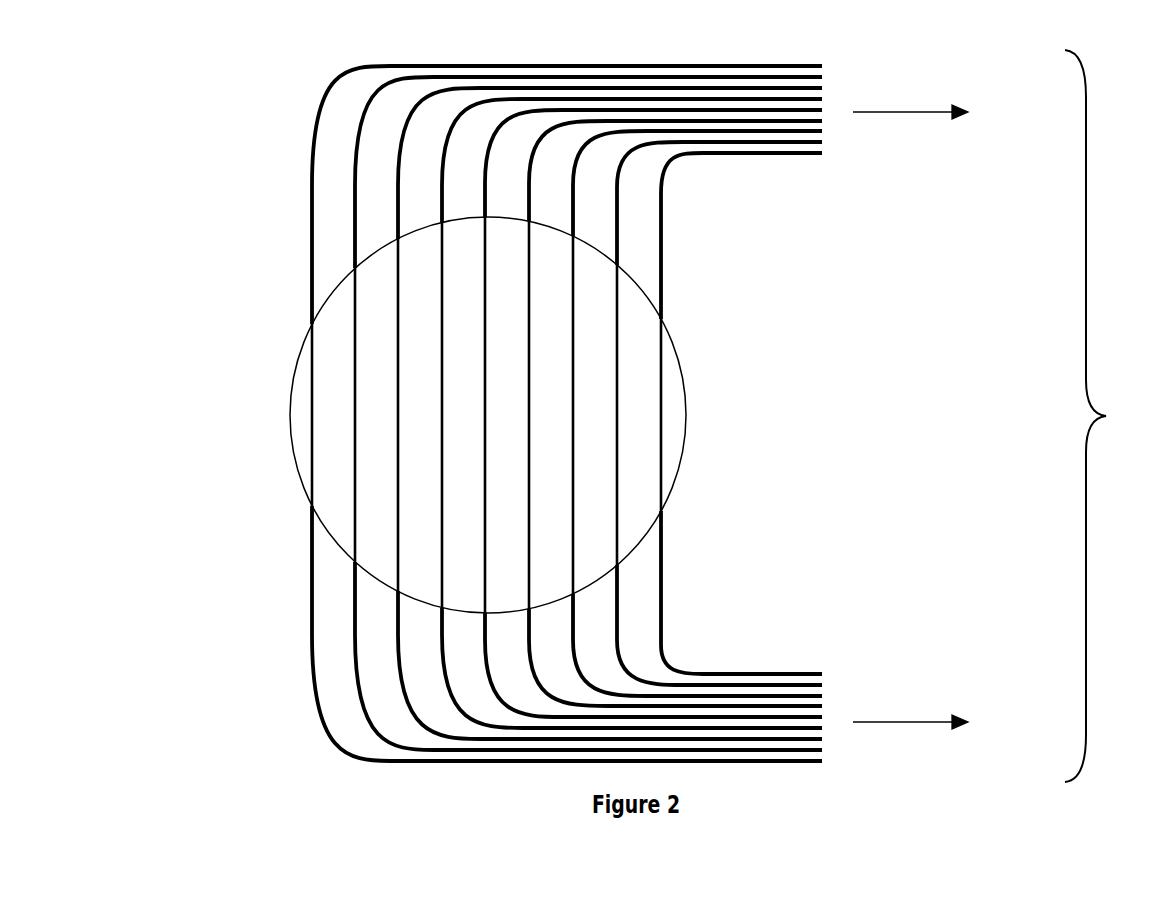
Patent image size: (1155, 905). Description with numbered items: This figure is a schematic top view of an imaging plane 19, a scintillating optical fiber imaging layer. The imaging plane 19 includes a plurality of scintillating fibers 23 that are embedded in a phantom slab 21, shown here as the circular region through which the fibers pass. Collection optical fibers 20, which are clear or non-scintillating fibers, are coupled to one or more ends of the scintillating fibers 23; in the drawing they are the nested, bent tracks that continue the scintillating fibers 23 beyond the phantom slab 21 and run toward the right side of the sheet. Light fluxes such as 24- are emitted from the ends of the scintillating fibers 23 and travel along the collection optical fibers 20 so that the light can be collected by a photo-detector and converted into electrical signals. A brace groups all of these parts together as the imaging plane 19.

The imaging plane 19 is at (1103, 416).
The collection optical fibers 20 is at (353, 200).
The phantom slab 21 is at (333, 405).
The scintillating fibers 23 is at (397, 523).
The light flux 24- is at (910, 712).